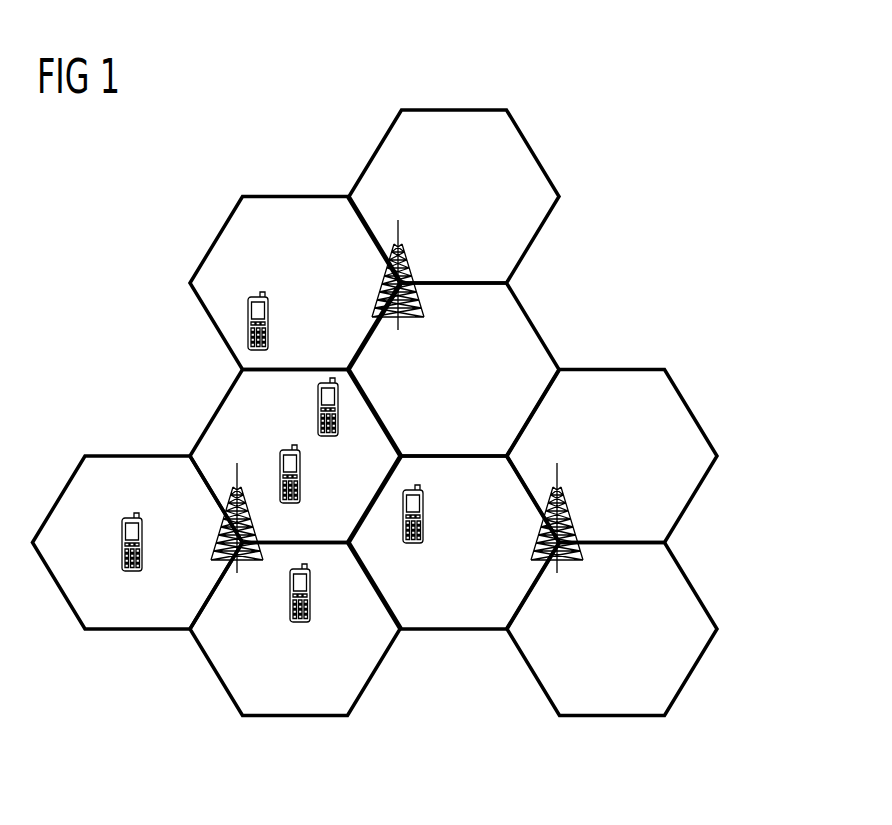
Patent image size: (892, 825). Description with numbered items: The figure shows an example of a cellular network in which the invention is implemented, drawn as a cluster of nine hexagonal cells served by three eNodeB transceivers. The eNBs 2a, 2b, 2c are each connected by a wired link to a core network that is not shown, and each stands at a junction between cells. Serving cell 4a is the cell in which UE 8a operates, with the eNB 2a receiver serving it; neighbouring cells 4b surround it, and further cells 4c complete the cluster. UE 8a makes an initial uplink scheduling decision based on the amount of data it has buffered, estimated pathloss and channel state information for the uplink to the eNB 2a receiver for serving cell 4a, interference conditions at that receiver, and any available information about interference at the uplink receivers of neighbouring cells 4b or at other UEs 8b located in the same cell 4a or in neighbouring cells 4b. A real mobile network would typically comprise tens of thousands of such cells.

The eNB 2a is at (260, 530).
The eNB 2b is at (420, 272).
The eNB 2c is at (575, 527).
The serving cell 4a is at (215, 412).
The neighbouring cells 4b is at (213, 240).
The cell 4c is at (533, 152).
The UE 8a is at (300, 470).
The other UEs 8b is at (268, 318).